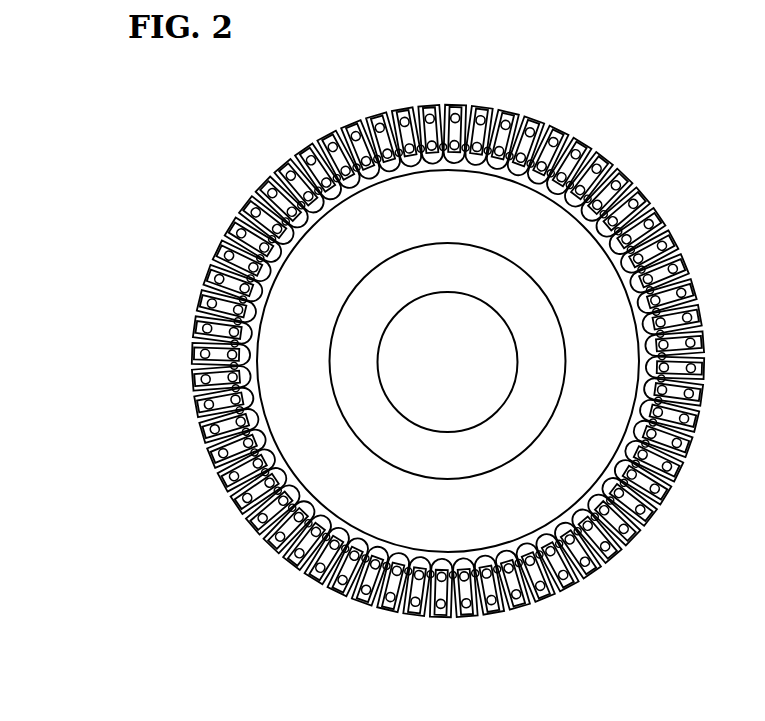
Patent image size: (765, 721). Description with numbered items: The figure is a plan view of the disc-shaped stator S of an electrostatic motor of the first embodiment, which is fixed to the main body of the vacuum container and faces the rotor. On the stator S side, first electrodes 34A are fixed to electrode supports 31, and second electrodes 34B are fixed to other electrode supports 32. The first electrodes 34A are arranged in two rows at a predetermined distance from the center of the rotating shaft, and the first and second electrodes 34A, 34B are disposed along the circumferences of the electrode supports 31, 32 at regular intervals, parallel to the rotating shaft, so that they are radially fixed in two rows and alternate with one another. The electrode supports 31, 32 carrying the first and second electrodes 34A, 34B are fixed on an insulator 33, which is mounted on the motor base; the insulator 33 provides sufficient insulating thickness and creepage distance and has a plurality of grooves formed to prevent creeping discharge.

The electrode support 31 is at (529, 120).
The electrode support 32 is at (335, 160).
The insulator 33 is at (510, 283).
The first electrode 34A is at (566, 144).
The second electrode 34B is at (598, 160).
The stator S is at (745, 406).